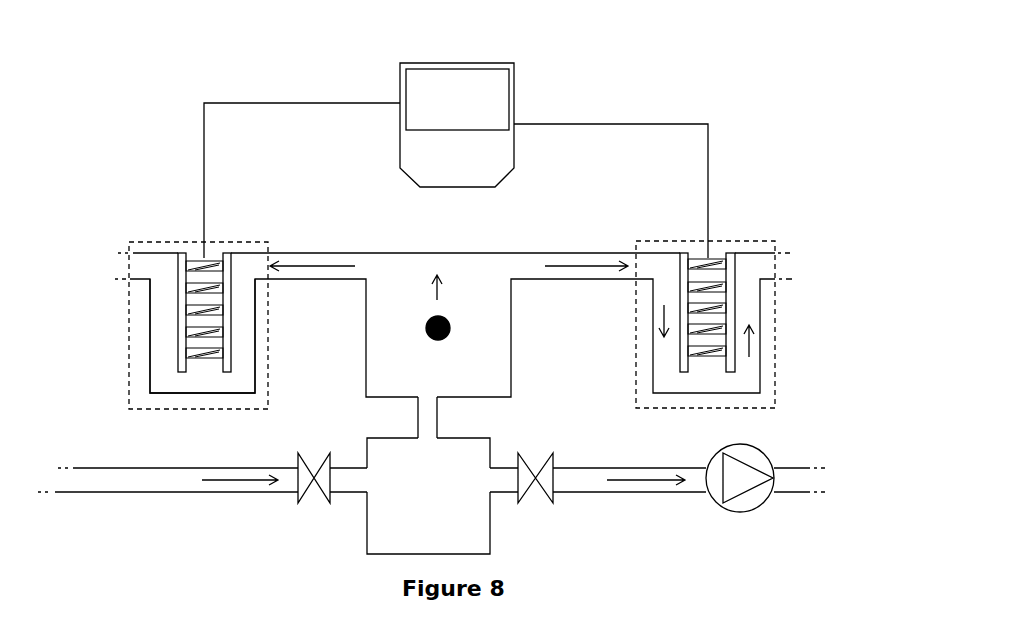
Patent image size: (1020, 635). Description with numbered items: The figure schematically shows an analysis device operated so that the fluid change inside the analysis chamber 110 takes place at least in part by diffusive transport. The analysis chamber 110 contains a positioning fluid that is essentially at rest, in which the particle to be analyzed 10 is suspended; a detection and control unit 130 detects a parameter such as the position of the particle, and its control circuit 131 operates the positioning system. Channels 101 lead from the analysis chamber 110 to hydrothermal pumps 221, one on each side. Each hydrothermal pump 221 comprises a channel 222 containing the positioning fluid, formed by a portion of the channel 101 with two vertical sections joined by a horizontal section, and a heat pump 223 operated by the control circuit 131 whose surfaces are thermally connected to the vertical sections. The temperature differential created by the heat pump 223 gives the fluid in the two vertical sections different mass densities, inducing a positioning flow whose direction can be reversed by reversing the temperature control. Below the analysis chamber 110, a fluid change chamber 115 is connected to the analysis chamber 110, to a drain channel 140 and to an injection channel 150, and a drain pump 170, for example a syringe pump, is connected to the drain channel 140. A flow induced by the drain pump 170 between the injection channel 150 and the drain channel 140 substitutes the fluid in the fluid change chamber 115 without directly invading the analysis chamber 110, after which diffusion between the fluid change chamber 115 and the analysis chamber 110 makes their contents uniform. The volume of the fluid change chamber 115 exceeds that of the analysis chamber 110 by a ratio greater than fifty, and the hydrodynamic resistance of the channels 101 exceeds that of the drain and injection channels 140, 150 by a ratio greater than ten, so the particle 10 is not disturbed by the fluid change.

The particle to be analyzed 10 is at (458, 328).
The channel 101 is at (288, 253).
The analysis chamber 110 is at (405, 395).
The fluid change chamber 115 is at (388, 548).
The detection and control unit 130 is at (456, 143).
The control circuit 131 is at (509, 101).
The drain channel 140 is at (617, 500).
The injection channel 150 is at (268, 500).
The drain pump 170 is at (768, 507).
The hydrothermal pump 221 is at (473, 295).
The channel containing the positioning fluid 222 is at (157, 353).
The heat pump 223 is at (204, 364).